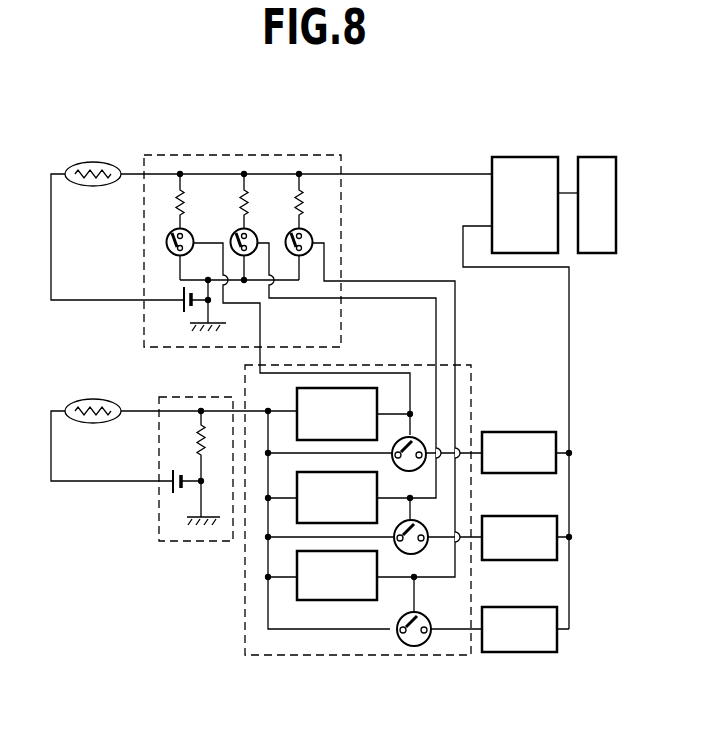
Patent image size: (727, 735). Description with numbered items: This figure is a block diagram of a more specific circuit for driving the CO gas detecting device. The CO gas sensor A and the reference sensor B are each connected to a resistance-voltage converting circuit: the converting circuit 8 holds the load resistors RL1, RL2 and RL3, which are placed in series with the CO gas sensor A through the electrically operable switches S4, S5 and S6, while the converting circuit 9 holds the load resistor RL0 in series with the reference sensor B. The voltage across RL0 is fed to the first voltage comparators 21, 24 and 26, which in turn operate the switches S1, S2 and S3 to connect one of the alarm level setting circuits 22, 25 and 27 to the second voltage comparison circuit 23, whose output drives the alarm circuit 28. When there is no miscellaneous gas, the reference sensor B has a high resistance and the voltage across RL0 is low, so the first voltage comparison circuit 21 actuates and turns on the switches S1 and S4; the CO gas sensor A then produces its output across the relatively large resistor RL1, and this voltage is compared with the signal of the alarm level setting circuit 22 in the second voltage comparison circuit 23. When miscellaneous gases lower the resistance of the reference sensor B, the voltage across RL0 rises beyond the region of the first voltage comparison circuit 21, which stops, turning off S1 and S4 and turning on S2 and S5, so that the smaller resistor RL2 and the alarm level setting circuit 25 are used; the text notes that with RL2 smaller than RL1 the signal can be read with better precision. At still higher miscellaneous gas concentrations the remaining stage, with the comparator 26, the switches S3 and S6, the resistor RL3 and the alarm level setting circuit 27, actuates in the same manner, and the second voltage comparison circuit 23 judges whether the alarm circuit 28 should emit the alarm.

The resistance-voltage converting circuit 8 is at (336, 155).
The resistance-voltage converting circuit 9 is at (193, 541).
The first voltage comparison circuit 21 is at (297, 400).
The alarm level setting circuit 22 is at (522, 432).
The second voltage comparison circuit 23 is at (529, 157).
The first voltage comparator 24 is at (378, 478).
The alarm level setting circuit 25 is at (520, 516).
The first voltage comparator 26 is at (310, 593).
The alarm level setting circuit 27 is at (517, 607).
The alarm circuit 28 is at (602, 157).
The switch S1 is at (405, 443).
The switch S2 is at (416, 529).
The switch S3 is at (410, 617).
The switch S4 is at (171, 249).
The switch S5 is at (231, 240).
The switch S6 is at (287, 240).
The load resistor RL0 is at (184, 446).
The load resistor RL1 is at (164, 201).
The load resistor RL2 is at (222, 201).
The load resistor RL3 is at (278, 201).
The CO gas sensor A is at (76, 163).
The reference sensor B is at (76, 400).